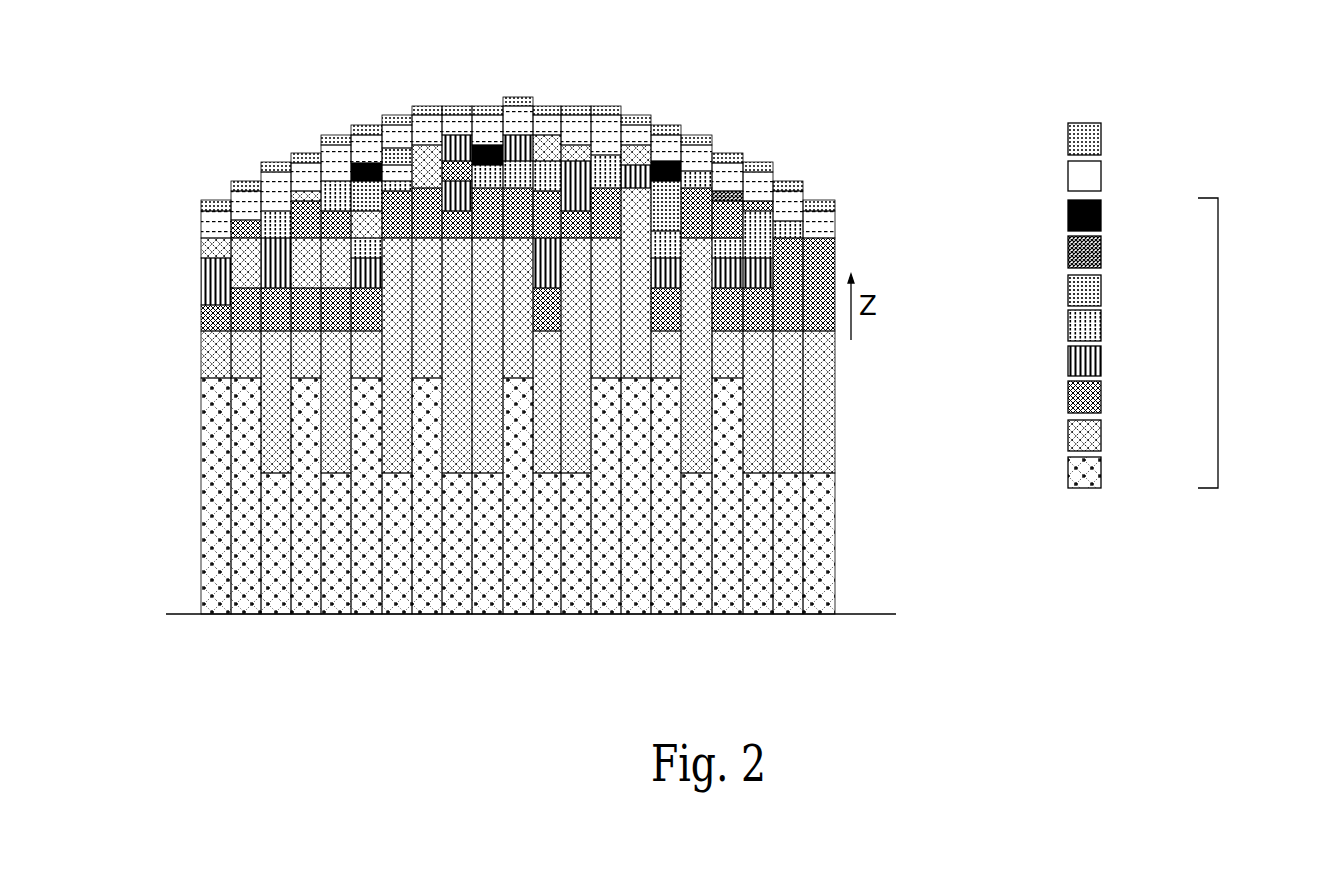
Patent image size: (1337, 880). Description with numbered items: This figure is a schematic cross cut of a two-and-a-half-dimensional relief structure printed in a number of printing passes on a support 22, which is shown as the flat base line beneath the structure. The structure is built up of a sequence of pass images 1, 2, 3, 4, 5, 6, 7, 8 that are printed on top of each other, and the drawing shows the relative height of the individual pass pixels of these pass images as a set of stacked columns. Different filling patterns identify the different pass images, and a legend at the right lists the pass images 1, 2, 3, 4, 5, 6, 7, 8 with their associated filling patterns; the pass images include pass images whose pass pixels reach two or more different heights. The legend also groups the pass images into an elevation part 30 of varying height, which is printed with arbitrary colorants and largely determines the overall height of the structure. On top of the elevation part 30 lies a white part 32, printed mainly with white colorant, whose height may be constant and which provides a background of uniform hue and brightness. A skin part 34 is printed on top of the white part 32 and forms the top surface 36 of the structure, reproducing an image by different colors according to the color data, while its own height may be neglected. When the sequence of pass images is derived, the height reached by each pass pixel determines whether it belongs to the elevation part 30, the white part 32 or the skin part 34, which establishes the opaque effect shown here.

The top surface 36 is at (352, 108).
The skin part 34 is at (1094, 141).
The white part 32 is at (1094, 176).
The elevation part 30 is at (1210, 337).
The support 22 is at (851, 604).
The pass image 1 is at (1103, 472).
The pass image 2 is at (1103, 435).
The pass image 3 is at (1103, 397).
The pass image 4 is at (1103, 361).
The pass image 5 is at (1103, 325).
The pass image 6 is at (1103, 290).
The pass image 7 is at (1103, 252).
The pass image 8 is at (1103, 215).